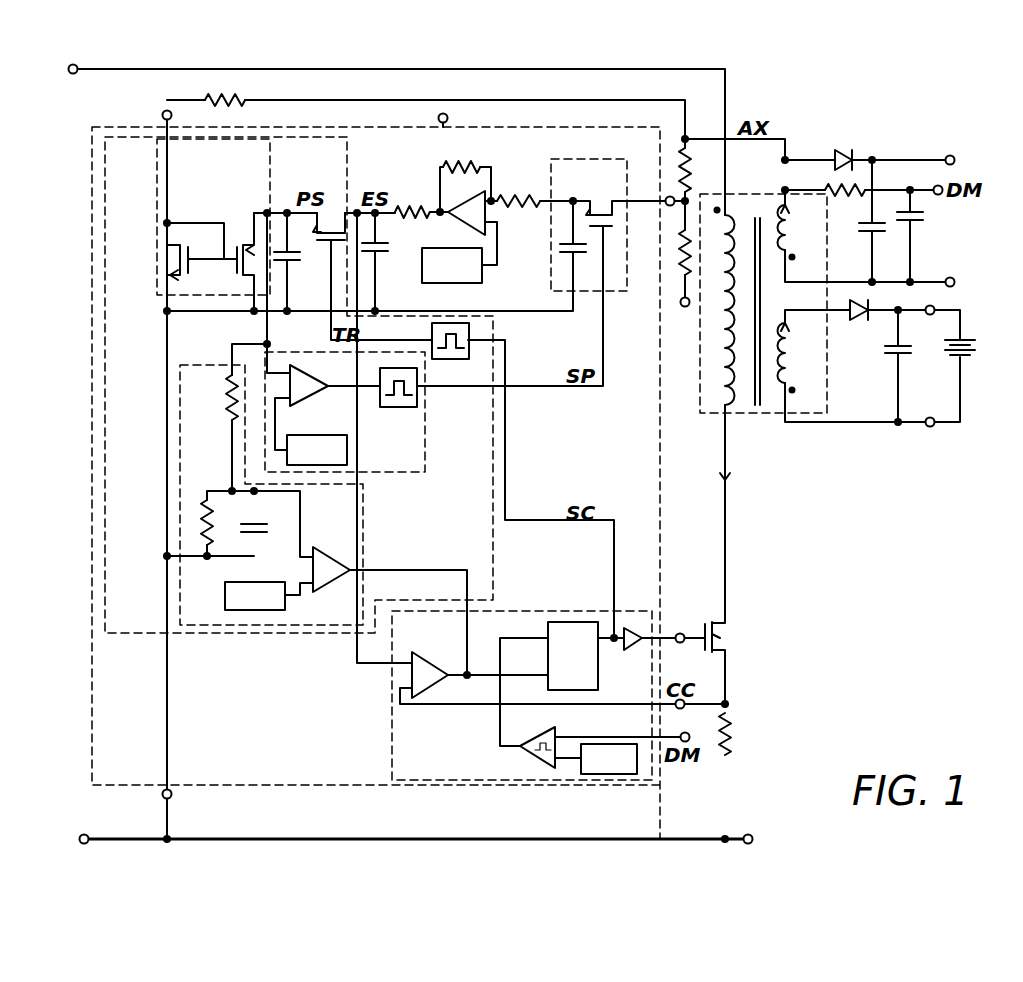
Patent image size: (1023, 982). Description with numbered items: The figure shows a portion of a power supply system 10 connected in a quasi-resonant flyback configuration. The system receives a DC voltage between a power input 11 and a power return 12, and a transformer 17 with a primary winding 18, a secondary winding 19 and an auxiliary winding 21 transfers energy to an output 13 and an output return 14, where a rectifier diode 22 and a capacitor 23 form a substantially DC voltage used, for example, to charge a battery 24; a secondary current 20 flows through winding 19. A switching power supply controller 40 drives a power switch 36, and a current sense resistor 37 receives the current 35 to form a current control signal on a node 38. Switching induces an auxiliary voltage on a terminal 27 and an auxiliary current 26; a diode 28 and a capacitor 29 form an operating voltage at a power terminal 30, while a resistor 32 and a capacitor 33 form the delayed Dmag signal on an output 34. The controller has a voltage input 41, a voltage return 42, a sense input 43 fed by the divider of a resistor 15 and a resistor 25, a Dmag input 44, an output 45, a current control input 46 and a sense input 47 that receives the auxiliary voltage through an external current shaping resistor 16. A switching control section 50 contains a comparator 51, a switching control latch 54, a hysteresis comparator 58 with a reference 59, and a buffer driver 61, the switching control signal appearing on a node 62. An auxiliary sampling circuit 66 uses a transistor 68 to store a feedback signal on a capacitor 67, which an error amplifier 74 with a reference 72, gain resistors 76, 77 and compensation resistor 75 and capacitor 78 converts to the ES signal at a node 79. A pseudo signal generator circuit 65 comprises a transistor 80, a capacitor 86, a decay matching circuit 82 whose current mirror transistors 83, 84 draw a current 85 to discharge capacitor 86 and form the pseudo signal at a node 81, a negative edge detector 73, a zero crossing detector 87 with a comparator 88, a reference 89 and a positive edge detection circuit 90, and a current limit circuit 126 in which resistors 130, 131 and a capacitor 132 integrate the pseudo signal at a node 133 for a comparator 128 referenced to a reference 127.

The power supply system 10 is at (616, 869).
The power input 11 is at (78, 65).
The power return 12 is at (81, 834).
The output 13 is at (935, 306).
The output return 14 is at (933, 426).
The resistor 15 is at (688, 150).
The external current shaping resistor 16 is at (232, 98).
The transformer 17 is at (752, 327).
The primary winding 18 is at (725, 362).
The secondary winding 19 is at (790, 380).
The secondary current 20 is at (788, 335).
The auxiliary winding 21 is at (790, 250).
The rectifier diode 22 is at (862, 320).
The capacitor 23 is at (903, 356).
The battery 24 is at (966, 340).
The resistor 25 is at (680, 252).
The auxiliary current 26 is at (790, 210).
The terminal 27 is at (782, 188).
The diode 28 is at (842, 150).
The capacitor 29 is at (877, 233).
The power terminal 30 is at (953, 156).
The resistor 32 is at (858, 195).
The capacitor 33 is at (915, 222).
The output 34 is at (942, 195).
The current 35 is at (727, 482).
The power switch 36 is at (726, 642).
The current sense resistor 37 is at (731, 732).
The node 38 is at (730, 702).
The switching power supply controller 40 is at (497, 699).
The voltage input 41 is at (447, 114).
The voltage return 42 is at (162, 796).
The sense input 43 is at (670, 196).
The Dmag input 44 is at (690, 740).
The output 45 is at (681, 633).
The current control input 46 is at (682, 708).
The sense input 47 is at (162, 115).
The switching control section 50 is at (392, 718).
The comparator 51 is at (432, 682).
The switching control latch 54 is at (598, 672).
The hysteresis comparator 58 is at (528, 735).
The reference voltage generator 59 is at (592, 775).
The buffer driver 61 is at (644, 640).
The node 62 is at (616, 630).
The pseudo signal generator circuit 65 is at (405, 399).
The auxiliary sampling circuit 66 is at (569, 231).
The capacitor 67 is at (568, 245).
The transistor 68 is at (604, 205).
The reference generator circuit 72 is at (450, 285).
The negative edge detector 73 is at (470, 328).
The error amplifier 74 is at (440, 216).
The resistor 75 is at (412, 208).
The resistor 76 is at (463, 175).
The resistor 77 is at (513, 195).
The capacitor 78 is at (380, 255).
The node 79 is at (358, 208).
The transistor 80 is at (335, 205).
The node 81 is at (290, 210).
The decay matching circuit 82 is at (210, 233).
The transistor 83 is at (165, 258).
The transistor 84 is at (252, 280).
The current 85 is at (262, 210).
The capacitor 86 is at (292, 262).
The zero crossing detector 87 is at (283, 356).
The comparator 88 is at (312, 380).
The reference generator 89 is at (298, 434).
The positive edge detection circuit 90 is at (392, 408).
The current limit circuit 126 is at (303, 494).
The reference generator 127 is at (290, 605).
The comparator 128 is at (335, 560).
The resistor 130 is at (205, 508).
The resistor 131 is at (230, 405).
The capacitor 132 is at (278, 520).
The node 133 is at (253, 485).